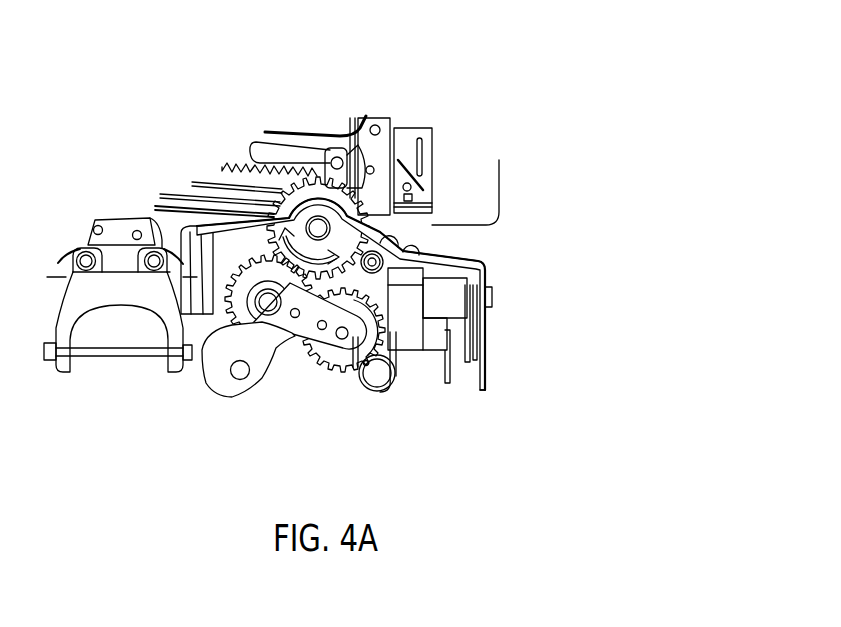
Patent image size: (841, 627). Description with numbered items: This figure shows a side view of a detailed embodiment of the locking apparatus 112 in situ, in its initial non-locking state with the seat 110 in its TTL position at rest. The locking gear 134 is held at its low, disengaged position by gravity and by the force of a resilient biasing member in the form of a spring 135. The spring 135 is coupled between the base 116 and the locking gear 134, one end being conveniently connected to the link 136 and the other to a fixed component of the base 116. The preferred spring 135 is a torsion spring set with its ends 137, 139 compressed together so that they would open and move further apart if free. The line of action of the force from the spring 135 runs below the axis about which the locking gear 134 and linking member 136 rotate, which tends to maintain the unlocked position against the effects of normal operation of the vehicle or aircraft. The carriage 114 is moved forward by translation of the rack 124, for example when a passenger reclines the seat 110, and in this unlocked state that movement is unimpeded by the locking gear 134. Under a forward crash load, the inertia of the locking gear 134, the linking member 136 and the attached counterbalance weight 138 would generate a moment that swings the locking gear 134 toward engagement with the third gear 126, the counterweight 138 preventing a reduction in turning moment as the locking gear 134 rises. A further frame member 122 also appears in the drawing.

The seat 110 is at (565, 75).
The locking apparatus 112 is at (198, 410).
The carriage 114 is at (313, 132).
The base 116 is at (488, 359).
The frame member 122 is at (505, 190).
The rack 124 is at (222, 167).
The third gear 126 is at (357, 198).
The locking gear 134 is at (337, 373).
The spring 135 is at (393, 390).
The link 136 is at (296, 334).
The spring end 137 is at (360, 333).
The counterbalance weight 138 is at (243, 385).
The spring end 139 is at (398, 340).